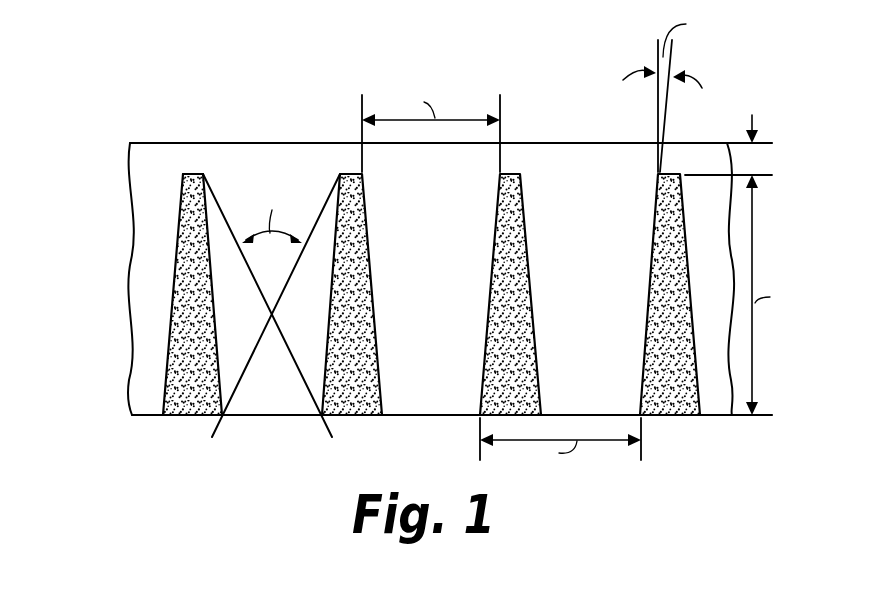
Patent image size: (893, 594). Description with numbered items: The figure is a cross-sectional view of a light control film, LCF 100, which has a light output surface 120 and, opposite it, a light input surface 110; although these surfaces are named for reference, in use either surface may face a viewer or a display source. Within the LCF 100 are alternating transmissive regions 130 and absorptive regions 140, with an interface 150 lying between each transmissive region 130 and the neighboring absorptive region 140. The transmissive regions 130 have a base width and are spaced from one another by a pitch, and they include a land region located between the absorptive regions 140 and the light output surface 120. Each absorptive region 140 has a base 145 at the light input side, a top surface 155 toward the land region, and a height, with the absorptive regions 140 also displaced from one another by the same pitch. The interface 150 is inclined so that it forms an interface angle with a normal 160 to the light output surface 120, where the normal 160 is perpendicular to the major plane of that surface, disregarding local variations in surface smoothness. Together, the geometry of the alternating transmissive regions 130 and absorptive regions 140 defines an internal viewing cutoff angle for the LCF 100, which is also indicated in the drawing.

The LCF 100 is at (208, 55).
The light input surface 110 is at (275, 416).
The light output surface 120 is at (326, 142).
The transmissive regions 130 is at (230, 357).
The absorptive regions 140 is at (188, 298).
The base 145 is at (183, 416).
The interface 150 is at (651, 277).
The top surface 155 is at (190, 172).
The normal 160 is at (656, 108).